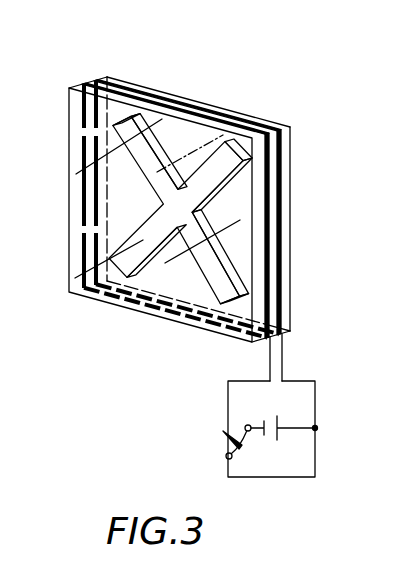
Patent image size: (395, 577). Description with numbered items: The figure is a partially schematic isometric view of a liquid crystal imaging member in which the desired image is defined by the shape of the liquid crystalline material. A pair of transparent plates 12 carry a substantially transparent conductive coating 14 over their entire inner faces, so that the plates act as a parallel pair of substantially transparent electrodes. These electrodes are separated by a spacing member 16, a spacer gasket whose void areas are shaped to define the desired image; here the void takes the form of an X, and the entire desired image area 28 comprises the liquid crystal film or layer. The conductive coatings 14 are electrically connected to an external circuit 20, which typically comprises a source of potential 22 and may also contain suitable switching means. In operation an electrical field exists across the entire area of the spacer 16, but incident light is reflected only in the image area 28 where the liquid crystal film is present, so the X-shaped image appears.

The transparent plates 12 is at (69, 88).
The transparent conductive coating 14 is at (81, 86).
The spacing member 16 is at (88, 82).
The image area 28 is at (160, 178).
The external circuit 20 is at (321, 407).
The source of potential 22 is at (277, 437).